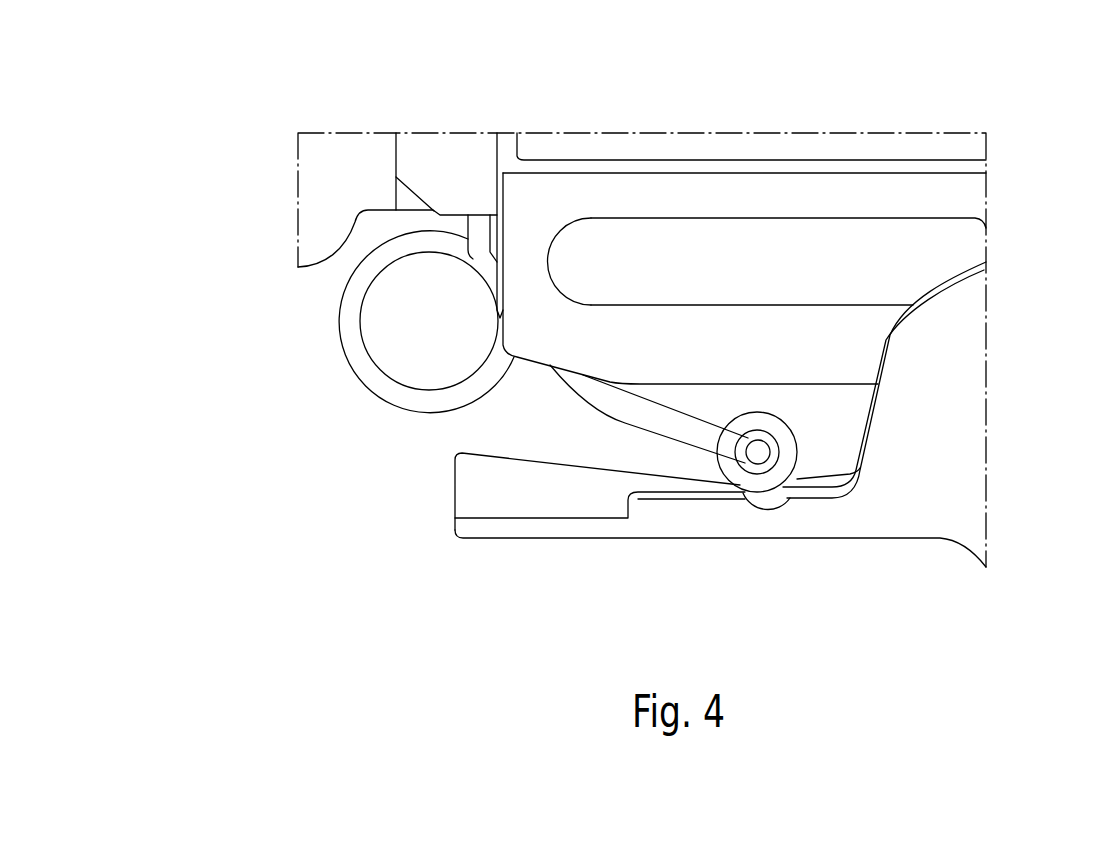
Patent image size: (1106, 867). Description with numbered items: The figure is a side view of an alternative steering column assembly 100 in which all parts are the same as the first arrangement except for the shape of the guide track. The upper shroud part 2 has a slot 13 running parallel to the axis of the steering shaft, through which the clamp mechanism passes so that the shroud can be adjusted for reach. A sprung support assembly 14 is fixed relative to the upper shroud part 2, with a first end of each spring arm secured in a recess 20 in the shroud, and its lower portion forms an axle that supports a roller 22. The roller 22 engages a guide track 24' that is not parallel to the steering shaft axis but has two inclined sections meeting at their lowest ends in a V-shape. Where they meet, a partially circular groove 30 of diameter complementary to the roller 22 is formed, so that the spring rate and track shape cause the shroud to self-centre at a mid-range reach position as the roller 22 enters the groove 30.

The steering column assembly 100 is at (265, 135).
The upper shroud part 2 is at (690, 153).
The recess 20 is at (481, 160).
The sprung support assembly 14 is at (345, 326).
The slot 13 is at (928, 267).
The guide element 22 is at (797, 450).
The guide track 24' is at (720, 542).
The partially circular groove 30 is at (767, 508).